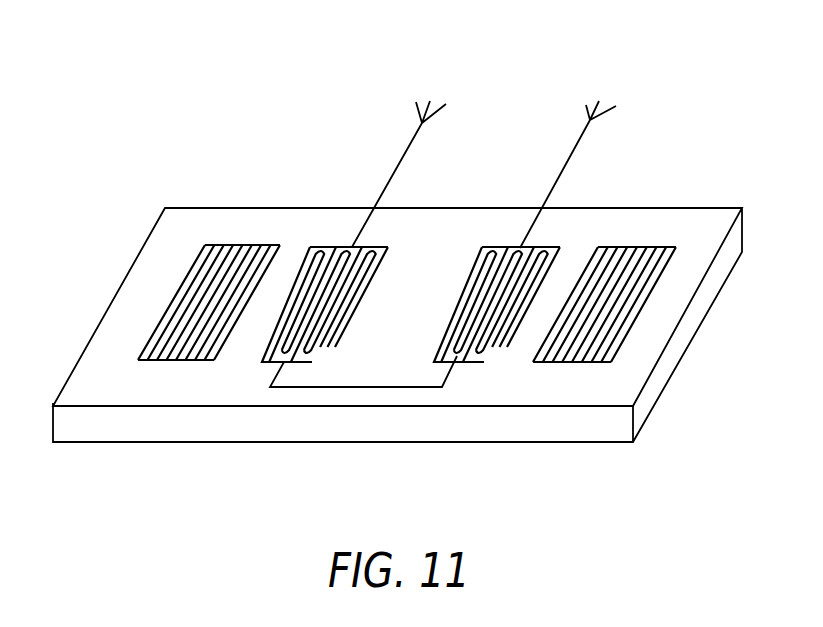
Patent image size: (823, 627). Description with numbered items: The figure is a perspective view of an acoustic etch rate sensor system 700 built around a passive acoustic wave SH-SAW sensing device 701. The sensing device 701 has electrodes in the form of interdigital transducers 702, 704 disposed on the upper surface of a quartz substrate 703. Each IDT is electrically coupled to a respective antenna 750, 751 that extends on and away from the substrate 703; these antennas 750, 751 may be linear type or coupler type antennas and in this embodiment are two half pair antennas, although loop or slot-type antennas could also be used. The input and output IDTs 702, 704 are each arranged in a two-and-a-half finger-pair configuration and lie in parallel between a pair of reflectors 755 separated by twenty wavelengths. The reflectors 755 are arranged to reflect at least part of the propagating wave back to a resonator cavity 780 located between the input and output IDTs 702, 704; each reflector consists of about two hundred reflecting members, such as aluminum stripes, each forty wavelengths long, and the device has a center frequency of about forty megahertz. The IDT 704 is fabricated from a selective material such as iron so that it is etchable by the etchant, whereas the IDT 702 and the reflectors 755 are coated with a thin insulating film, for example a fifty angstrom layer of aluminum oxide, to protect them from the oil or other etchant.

The sensor device 700 is at (407, 262).
The sensing device 701 is at (110, 305).
The interdigital transducer 702 is at (304, 252).
The quartz substrate 703 is at (549, 428).
The interdigital transducer 704 is at (552, 266).
The antenna 750 is at (408, 145).
The antenna 751 is at (583, 143).
The reflector 755 is at (190, 270).
The resonator cavity 780 is at (376, 361).